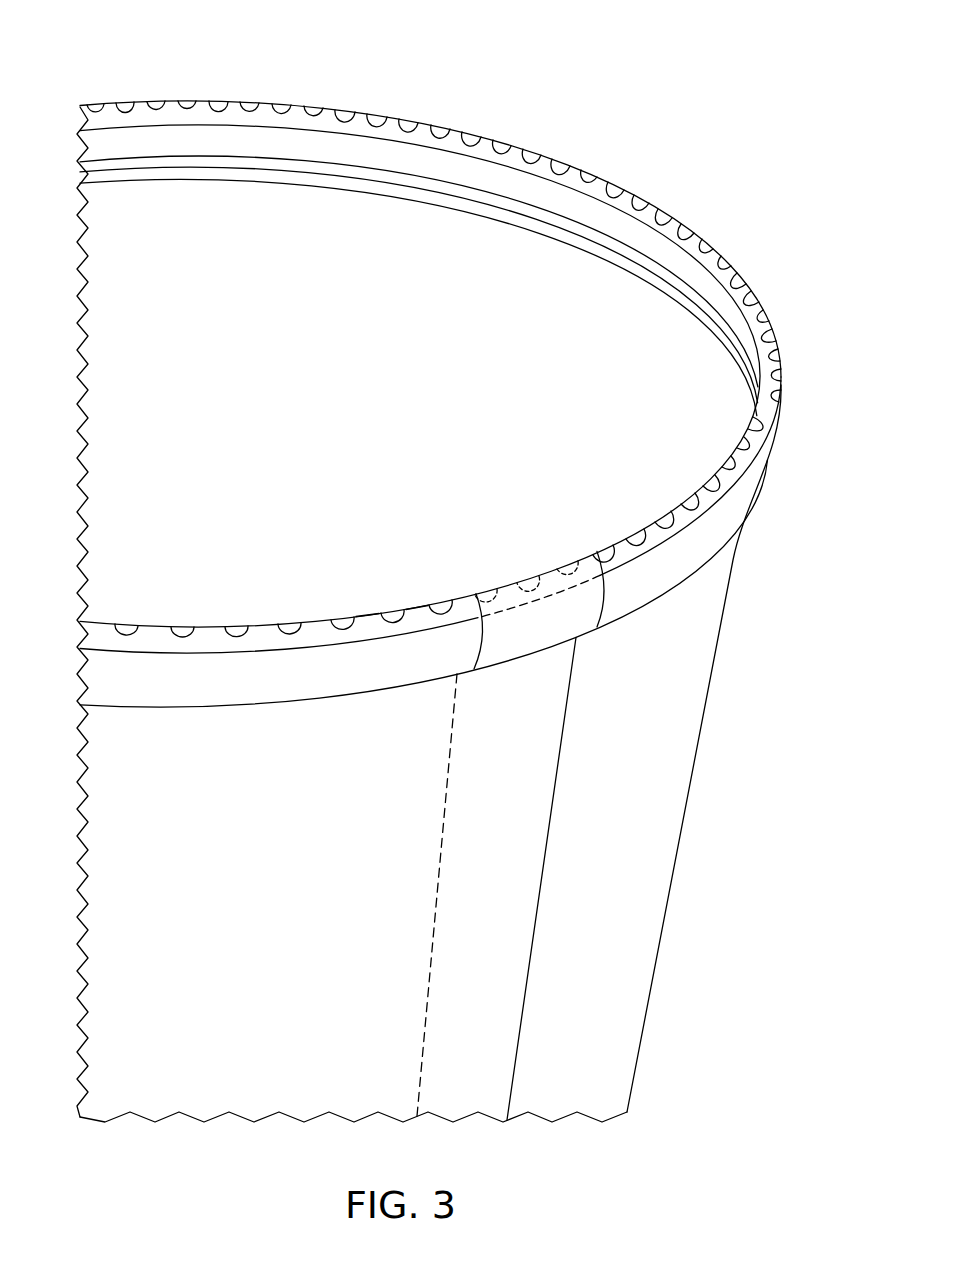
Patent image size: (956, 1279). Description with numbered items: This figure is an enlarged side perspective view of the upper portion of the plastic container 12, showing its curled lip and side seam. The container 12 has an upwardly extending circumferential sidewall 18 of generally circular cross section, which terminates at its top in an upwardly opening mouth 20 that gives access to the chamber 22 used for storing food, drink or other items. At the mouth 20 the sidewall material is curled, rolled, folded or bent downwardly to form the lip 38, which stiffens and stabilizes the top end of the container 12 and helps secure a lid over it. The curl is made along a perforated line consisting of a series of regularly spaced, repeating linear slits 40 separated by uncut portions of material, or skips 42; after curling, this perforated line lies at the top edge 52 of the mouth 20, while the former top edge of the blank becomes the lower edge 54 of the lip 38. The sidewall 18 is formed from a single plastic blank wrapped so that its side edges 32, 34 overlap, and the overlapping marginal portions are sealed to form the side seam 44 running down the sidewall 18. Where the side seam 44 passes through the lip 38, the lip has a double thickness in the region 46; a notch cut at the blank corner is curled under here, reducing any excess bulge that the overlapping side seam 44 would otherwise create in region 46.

The container 12 is at (768, 228).
The sidewall 18 is at (650, 842).
The mouth 20 is at (303, 106).
The chamber 22 is at (160, 360).
The side edge 32 is at (535, 930).
The side edge 34 is at (432, 943).
The lip 38 is at (747, 497).
The slits 40 is at (340, 619).
The skips 42 is at (363, 617).
The side seam 44 is at (481, 879).
The region 46 is at (552, 635).
The top edge 52 is at (576, 163).
The lower edge 54 is at (657, 598).